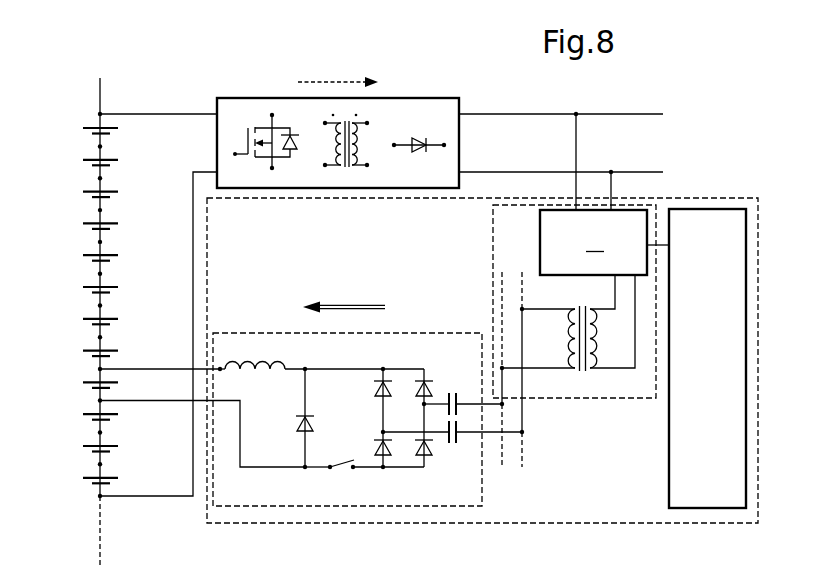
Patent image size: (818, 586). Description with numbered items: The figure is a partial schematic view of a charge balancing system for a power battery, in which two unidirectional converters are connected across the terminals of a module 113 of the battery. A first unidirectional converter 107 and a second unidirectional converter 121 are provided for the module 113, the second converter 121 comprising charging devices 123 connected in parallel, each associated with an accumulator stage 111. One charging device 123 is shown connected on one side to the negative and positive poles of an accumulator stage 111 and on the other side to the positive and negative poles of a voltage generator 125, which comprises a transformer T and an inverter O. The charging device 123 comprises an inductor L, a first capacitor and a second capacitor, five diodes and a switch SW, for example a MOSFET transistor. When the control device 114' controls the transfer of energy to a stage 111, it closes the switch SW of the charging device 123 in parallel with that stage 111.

The first unidirectional converter 107 is at (418, 98).
The accumulator stage 111 is at (83, 371).
The module 113 is at (67, 268).
The control device 114' is at (696, 358).
The second unidirectional converter 121 is at (688, 198).
The charging device 123 is at (464, 333).
The voltage generator 125 is at (615, 398).